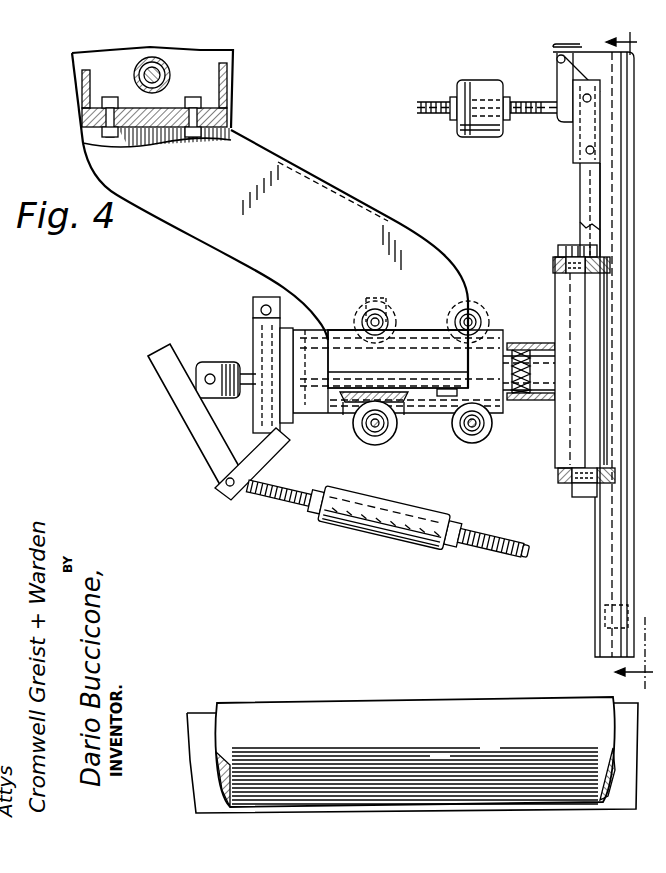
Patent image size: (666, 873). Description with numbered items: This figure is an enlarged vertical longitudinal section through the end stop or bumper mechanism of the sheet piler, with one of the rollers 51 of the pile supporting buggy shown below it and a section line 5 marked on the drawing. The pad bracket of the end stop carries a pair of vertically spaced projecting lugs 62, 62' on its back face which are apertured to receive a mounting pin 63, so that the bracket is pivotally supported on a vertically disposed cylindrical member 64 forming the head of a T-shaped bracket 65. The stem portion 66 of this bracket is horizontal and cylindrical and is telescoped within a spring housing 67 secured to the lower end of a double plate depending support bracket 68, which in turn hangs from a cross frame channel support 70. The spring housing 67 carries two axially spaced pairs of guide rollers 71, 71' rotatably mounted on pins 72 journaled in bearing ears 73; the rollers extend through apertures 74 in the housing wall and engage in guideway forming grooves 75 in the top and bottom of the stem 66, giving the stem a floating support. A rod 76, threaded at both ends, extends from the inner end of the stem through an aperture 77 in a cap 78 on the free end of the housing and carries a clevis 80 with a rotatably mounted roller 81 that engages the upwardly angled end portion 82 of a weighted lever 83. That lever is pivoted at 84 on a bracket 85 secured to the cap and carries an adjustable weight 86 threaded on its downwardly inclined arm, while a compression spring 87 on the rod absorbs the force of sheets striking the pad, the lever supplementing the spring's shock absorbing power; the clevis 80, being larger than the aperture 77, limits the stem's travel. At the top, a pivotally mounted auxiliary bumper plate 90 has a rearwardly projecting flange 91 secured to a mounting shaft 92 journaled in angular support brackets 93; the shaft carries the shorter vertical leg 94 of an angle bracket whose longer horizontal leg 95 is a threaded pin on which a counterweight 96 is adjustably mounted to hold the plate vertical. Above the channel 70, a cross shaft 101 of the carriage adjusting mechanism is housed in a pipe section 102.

The section line 5— 5 is at (636, 361).
The rollers 51 is at (458, 706).
The projecting lug 62 is at (564, 482).
The projecting lug 62' is at (563, 254).
The mounting pin 63 is at (557, 452).
The cylindrical member 64 is at (556, 298).
The T-shaped bracket 65 is at (540, 401).
The stem portion 66 is at (512, 370).
The spring housing 67 is at (423, 413).
The depending support bracket 68 is at (400, 227).
The cross frame channel support 70 is at (228, 110).
The guide rollers 71 is at (469, 374).
The guide rollers 71' is at (378, 375).
The pin 72 is at (363, 307).
The bearing ears 73 is at (389, 312).
The apertures 74 is at (399, 432).
The guideway forming grooves 75 is at (417, 328).
The rod 76 is at (300, 345).
The aperture 77 is at (253, 337).
The cap 78 is at (253, 307).
The clevis 80 is at (217, 357).
The roller 81 is at (200, 380).
The upwardly angled end portion 82 is at (188, 425).
The weighted lever 83 is at (478, 543).
The pivot 84 is at (225, 484).
The bracket 85 is at (245, 452).
The weight 86 is at (348, 523).
The compression spring 87 is at (517, 401).
The auxiliary bumper plate 90 is at (633, 182).
The rearwardly projecting flange 91 is at (580, 47).
The mounting shaft 92 is at (556, 59).
The angular support brackets 93 is at (580, 120).
The shorter vertical leg 94 is at (557, 92).
The longer horizontal leg 95 is at (514, 118).
The counterweight 96 is at (468, 135).
The cross shaft 101 is at (232, 63).
The pipe section 102 is at (137, 70).